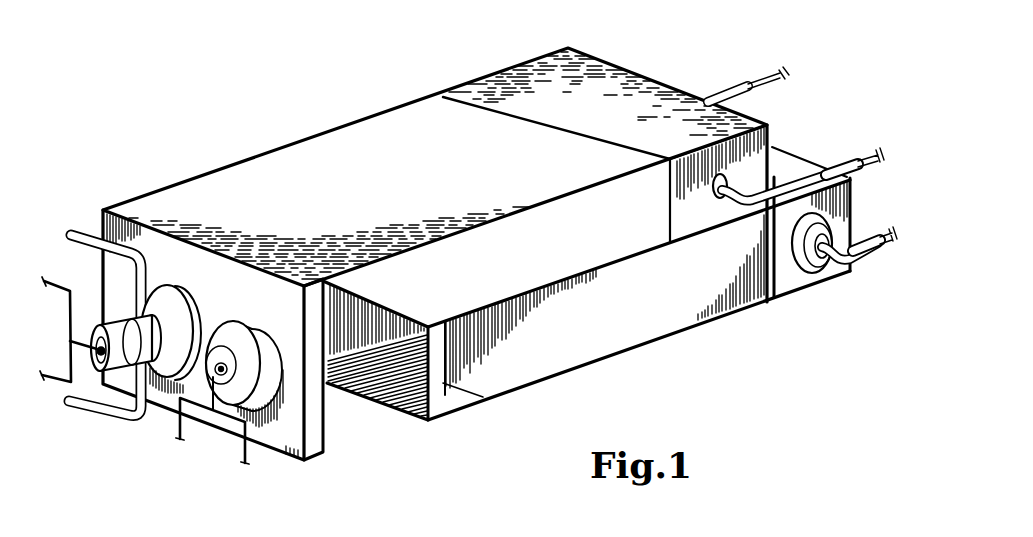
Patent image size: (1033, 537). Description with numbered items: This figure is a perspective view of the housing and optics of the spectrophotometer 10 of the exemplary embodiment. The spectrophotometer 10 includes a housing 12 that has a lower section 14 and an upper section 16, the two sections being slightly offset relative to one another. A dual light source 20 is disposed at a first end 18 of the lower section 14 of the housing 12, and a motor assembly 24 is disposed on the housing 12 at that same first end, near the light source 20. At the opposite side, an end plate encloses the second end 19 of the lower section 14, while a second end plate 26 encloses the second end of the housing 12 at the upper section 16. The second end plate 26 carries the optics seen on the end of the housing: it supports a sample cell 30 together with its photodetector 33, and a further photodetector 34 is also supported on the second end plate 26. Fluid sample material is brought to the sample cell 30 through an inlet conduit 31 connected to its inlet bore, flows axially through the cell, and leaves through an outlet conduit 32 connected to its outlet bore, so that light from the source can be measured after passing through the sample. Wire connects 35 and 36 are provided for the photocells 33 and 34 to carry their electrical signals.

The spectrophotometer 10 is at (340, 67).
The housing 12 is at (404, 385).
The lower section 14 is at (643, 321).
The upper section 16 is at (443, 113).
The first end 18 is at (766, 285).
The second end 19 is at (443, 383).
The dual light source 20 is at (795, 283).
The motor assembly 24 is at (587, 73).
The second end plate 26 is at (170, 248).
The sample cell 30 is at (107, 350).
The inlet conduit 31 is at (72, 230).
The outlet conduit 32 is at (80, 410).
The photodetector 33 is at (112, 372).
The photodetector 34 is at (278, 388).
The wire connect 35 is at (238, 455).
The wire connect 36 is at (43, 282).